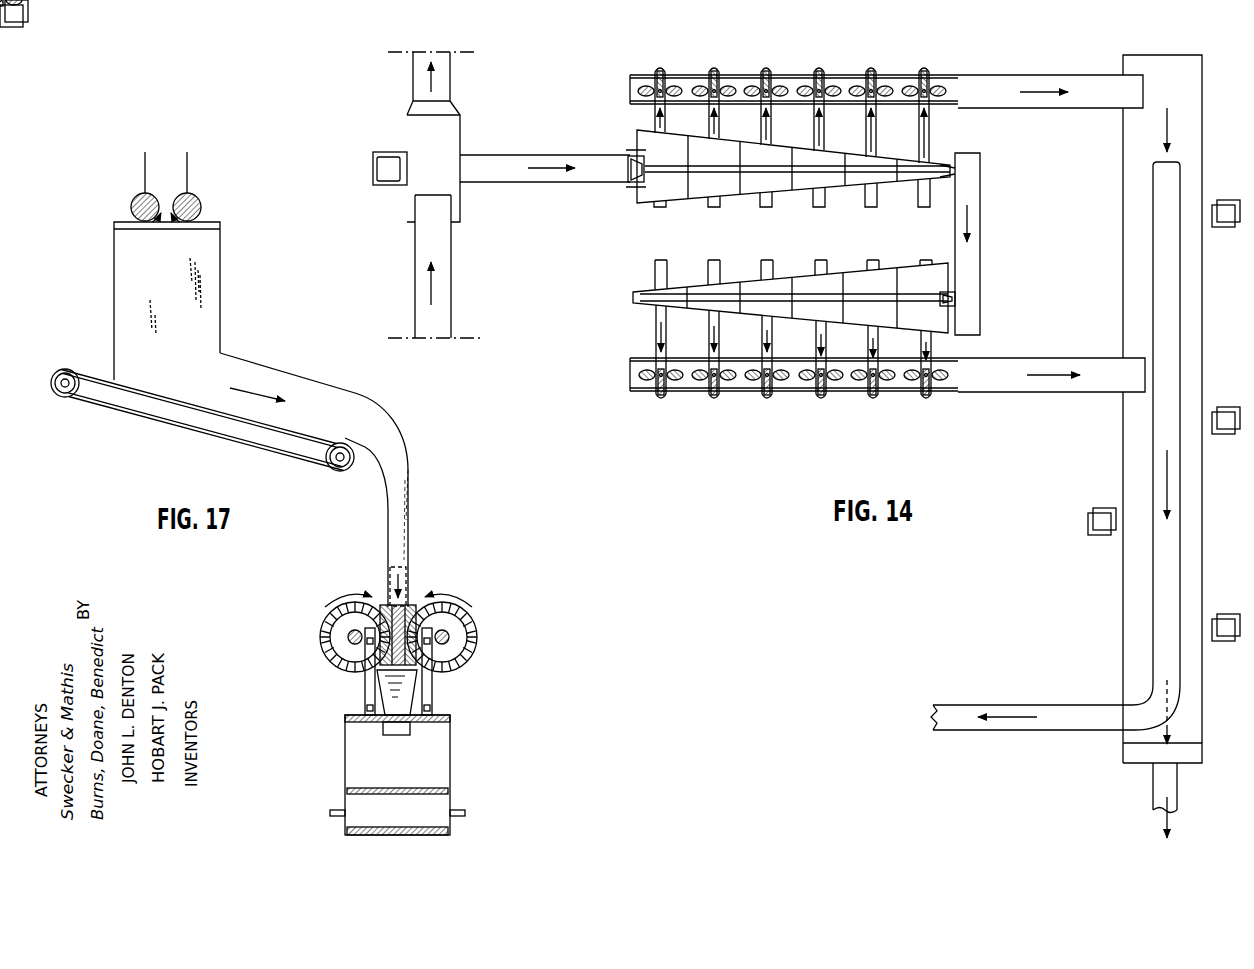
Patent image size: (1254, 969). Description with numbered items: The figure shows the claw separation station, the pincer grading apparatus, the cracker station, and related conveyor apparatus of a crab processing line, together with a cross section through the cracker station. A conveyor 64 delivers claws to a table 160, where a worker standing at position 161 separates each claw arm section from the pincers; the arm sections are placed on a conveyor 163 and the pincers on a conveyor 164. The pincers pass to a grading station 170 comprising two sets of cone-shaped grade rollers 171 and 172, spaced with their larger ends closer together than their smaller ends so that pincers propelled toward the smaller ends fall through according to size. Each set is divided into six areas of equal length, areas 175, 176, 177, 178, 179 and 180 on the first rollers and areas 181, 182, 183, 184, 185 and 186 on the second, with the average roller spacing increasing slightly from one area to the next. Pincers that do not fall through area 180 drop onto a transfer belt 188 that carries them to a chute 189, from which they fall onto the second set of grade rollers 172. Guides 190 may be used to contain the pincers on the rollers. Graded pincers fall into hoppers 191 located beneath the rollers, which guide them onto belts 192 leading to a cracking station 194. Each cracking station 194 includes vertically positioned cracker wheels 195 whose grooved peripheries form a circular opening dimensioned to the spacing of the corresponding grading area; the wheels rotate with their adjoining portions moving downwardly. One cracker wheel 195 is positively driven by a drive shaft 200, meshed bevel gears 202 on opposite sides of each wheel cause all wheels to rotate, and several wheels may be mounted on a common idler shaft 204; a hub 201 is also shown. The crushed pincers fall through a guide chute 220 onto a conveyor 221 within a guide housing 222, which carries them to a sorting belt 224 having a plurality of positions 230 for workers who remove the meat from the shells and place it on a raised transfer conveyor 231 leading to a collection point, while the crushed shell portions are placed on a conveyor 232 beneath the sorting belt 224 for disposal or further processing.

In FIG. 14, the conveyor 64 is at (443, 263).
In FIG. 14, the table 160 is at (447, 142).
In FIG. 14, the worker position 161 is at (382, 160).
In FIG. 14, the conveyor 163 is at (443, 85).
In FIG. 14, the conveyor 164 is at (570, 158).
In FIG. 14, the grading station 170 is at (636, 206).
In FIG. 17, the grade rollers 171 is at (176, 197).
In FIG. 14, the grade rollers 171 is at (944, 165).
In FIG. 14, the grade rollers 172 is at (950, 272).
In FIG. 14, the area 175 is at (673, 148).
In FIG. 14, the area 176 is at (722, 148).
In FIG. 14, the area 177 is at (774, 154).
In FIG. 14, the area 178 is at (808, 162).
In FIG. 14, the area 179 is at (857, 160).
In FIG. 14, the area 180 is at (909, 160).
In FIG. 14, the area 181 is at (906, 320).
In FIG. 14, the area 182 is at (858, 320).
In FIG. 14, the area 183 is at (810, 318).
In FIG. 14, the area 184 is at (780, 310).
In FIG. 14, the area 185 is at (726, 310).
In FIG. 14, the area 186 is at (674, 310).
In FIG. 14, the transfer belt 188 is at (974, 225).
In FIG. 14, the chute 189 is at (952, 306).
In FIG. 17, the guides 190 is at (144, 171).
In FIG. 17, the hoppers 191 is at (208, 292).
In FIG. 17, the belts 192 is at (160, 425).
In FIG. 14, the belts 192 is at (942, 118).
In FIG. 17, the cracking station 194 is at (480, 636).
In FIG. 17, the cracker wheels 195 is at (412, 605).
In FIG. 17, the drive shaft 200 is at (346, 633).
In FIG. 14, the drive shaft 200 is at (650, 98).
In FIG. 17, the roller hub 201 is at (320, 640).
In FIG. 17, the bevel gears 202 is at (350, 670).
In FIG. 17, the idler shaft 204 is at (452, 643).
In FIG. 17, the guide chute 220 is at (400, 690).
In FIG. 17, the conveyor 221 is at (348, 787).
In FIG. 14, the conveyor 221 is at (1062, 111).
In FIG. 17, the guide housing 222 is at (452, 760).
In FIG. 14, the sorting belt 224 is at (1190, 146).
In FIG. 14, the positions 230 is at (1226, 226).
In FIG. 14, the raised transfer conveyor 231 is at (1150, 301).
In FIG. 14, the conveyor 232 is at (1155, 787).